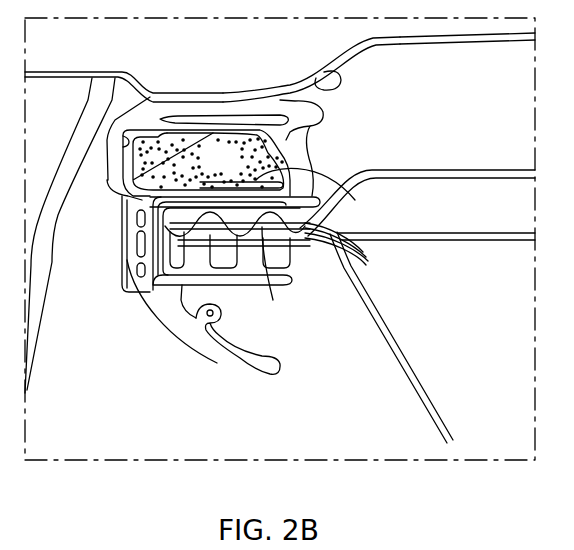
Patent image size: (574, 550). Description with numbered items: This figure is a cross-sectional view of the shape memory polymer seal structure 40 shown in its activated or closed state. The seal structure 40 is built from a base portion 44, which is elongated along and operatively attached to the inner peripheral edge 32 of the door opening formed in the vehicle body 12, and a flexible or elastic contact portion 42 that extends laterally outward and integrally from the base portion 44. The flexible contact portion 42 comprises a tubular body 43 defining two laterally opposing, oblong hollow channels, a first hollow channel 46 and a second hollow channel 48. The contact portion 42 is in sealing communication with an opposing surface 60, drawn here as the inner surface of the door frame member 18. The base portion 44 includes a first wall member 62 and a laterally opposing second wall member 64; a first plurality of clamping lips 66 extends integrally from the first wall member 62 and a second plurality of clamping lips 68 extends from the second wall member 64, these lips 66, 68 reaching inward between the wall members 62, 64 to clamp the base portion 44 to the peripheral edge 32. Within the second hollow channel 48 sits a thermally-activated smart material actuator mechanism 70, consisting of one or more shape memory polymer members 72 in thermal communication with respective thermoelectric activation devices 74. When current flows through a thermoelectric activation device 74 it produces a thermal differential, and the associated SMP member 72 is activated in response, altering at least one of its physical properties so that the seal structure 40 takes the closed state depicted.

The vehicle body 12 is at (412, 240).
The door frame member 18 is at (490, 45).
The inner peripheral edge 32 is at (318, 245).
The shape memory polymer seal structure 40 is at (345, 128).
The flexible contact portion 42 is at (115, 180).
The tubular body 43 is at (127, 75).
The base portion 44 is at (118, 250).
The first hollow channel 46 is at (197, 117).
The second hollow channel 48 is at (123, 138).
The surface 60 is at (323, 68).
The first wall member 62 is at (190, 307).
The second wall member 64 is at (160, 297).
The first plurality of clamping lips 66 is at (278, 258).
The second plurality of clamping lips 68 is at (351, 251).
The thermally-activated smart material actuator mechanism 70 is at (230, 129).
The shape memory polymer member 72 is at (232, 168).
The thermoelectric activation device 74 is at (352, 200).